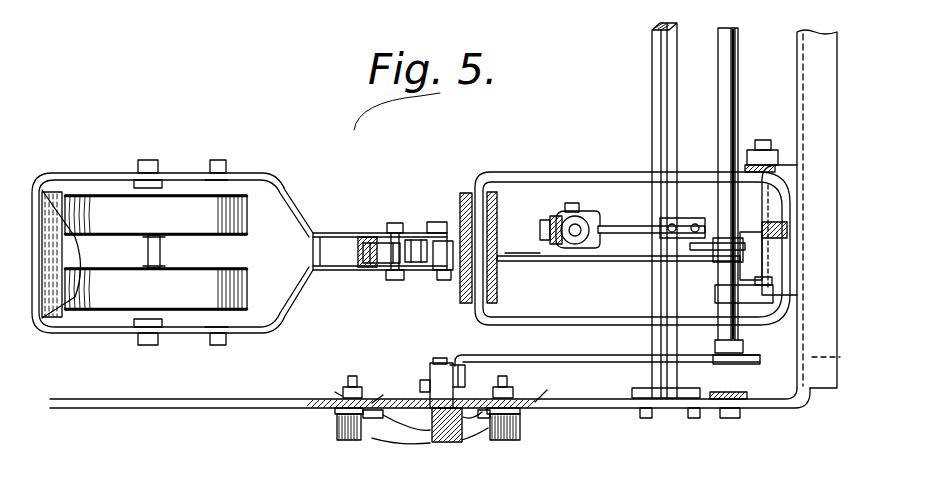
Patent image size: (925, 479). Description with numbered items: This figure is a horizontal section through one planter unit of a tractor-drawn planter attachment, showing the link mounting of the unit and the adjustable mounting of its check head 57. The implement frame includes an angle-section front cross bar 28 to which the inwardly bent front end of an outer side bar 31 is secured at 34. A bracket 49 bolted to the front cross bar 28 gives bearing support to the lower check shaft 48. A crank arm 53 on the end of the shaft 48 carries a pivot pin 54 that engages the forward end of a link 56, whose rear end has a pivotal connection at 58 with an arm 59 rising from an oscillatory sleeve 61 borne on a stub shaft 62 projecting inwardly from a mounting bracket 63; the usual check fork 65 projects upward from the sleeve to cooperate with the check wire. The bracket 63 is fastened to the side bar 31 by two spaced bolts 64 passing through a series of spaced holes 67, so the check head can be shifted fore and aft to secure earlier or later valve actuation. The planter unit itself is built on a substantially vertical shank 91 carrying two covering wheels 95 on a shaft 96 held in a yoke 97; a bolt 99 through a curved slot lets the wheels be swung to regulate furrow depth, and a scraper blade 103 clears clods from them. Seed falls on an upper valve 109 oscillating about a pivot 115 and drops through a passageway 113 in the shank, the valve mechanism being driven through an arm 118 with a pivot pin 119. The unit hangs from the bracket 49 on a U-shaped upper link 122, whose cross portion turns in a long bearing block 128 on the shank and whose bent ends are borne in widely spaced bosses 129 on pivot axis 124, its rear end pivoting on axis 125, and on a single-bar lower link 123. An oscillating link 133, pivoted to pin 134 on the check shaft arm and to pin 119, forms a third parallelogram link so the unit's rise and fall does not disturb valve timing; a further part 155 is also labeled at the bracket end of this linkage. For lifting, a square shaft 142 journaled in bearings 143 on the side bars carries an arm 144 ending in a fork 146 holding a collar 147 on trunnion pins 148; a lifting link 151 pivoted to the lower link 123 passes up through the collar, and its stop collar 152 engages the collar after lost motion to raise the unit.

The front cross bar 28 is at (830, 64).
The outer side bar 31 is at (56, 406).
The side bar front end attachment 34 is at (844, 352).
The lower shaft 48 is at (728, 30).
The bracket 49 is at (790, 172).
The crank arm 53 is at (754, 368).
The pivot pin 54 is at (748, 372).
The link 56 is at (624, 357).
The check head 57 is at (487, 440).
The pivotal connection 58 is at (457, 383).
The arm 59 is at (432, 367).
The oscillatory sleeve 61 is at (432, 380).
The stub shaft 62 is at (447, 362).
The mounting bracket 63 is at (370, 428).
The bolt 64 is at (520, 415).
The check fork 65 is at (443, 437).
The spaced holes 67 is at (444, 384).
The shank 91 is at (313, 252).
The covering wheels 95 is at (206, 268).
The shaft 96 is at (148, 253).
The yoke 97 is at (260, 186).
The bolt 99 is at (437, 275).
The scraper blade 103 is at (72, 222).
The upper valve 109 is at (377, 258).
The passageway 113 is at (358, 267).
The pivot 115 is at (390, 226).
The arm 118 is at (413, 277).
The pivot pin 119 is at (447, 280).
The upper link 122 is at (584, 356).
The lower link 123 is at (540, 260).
The pivot axis 124 is at (770, 280).
The pivot axis 125 is at (467, 192).
The bearing block 128 is at (496, 190).
The bosses 129 is at (768, 292).
The oscillating link 133 is at (640, 262).
The pivot pin 134 is at (720, 264).
The square shaft 142 is at (652, 90).
The bearings 143 is at (678, 418).
The arm 144 is at (630, 226).
The fork 146 is at (598, 212).
The collar 147 is at (565, 208).
The trunnion pins 148 is at (575, 247).
The lifting link 151 is at (762, 257).
The stop collar 152 is at (546, 238).
The bearing block 155 is at (745, 236).